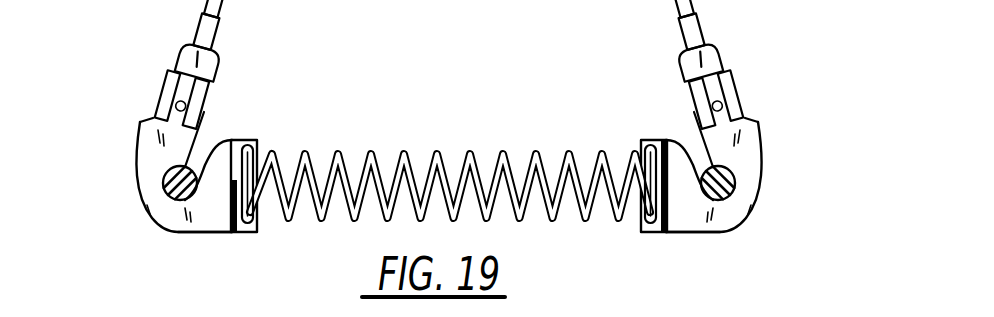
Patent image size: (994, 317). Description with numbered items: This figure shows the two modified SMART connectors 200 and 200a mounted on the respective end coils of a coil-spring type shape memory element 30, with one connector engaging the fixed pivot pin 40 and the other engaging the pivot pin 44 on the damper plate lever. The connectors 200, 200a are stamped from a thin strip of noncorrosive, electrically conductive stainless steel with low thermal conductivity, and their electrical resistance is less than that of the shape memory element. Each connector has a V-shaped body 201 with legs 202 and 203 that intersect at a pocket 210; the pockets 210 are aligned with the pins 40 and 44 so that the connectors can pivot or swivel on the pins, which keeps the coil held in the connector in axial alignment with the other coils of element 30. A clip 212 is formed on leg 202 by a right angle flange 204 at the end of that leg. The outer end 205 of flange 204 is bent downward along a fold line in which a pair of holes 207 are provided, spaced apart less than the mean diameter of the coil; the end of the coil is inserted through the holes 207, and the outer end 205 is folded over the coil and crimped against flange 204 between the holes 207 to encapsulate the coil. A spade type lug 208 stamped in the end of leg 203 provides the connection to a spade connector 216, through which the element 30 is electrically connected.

The shape memory element 30 is at (490, 145).
The fixed pivot pin 40 is at (164, 184).
The pivot pin 44 is at (740, 180).
The connector 200 is at (134, 158).
The connector 200a is at (777, 205).
The V-shaped body 201 is at (157, 218).
The leg 202 is at (174, 231).
The leg 203 is at (150, 134).
The right angle flange 204 is at (218, 232).
The outer end 205 is at (258, 224).
The holes 207 is at (248, 146).
The spade type lug 208 is at (200, 80).
The pocket 210 is at (162, 193).
The clip 212 is at (252, 142).
The spade connector 216 is at (177, 60).